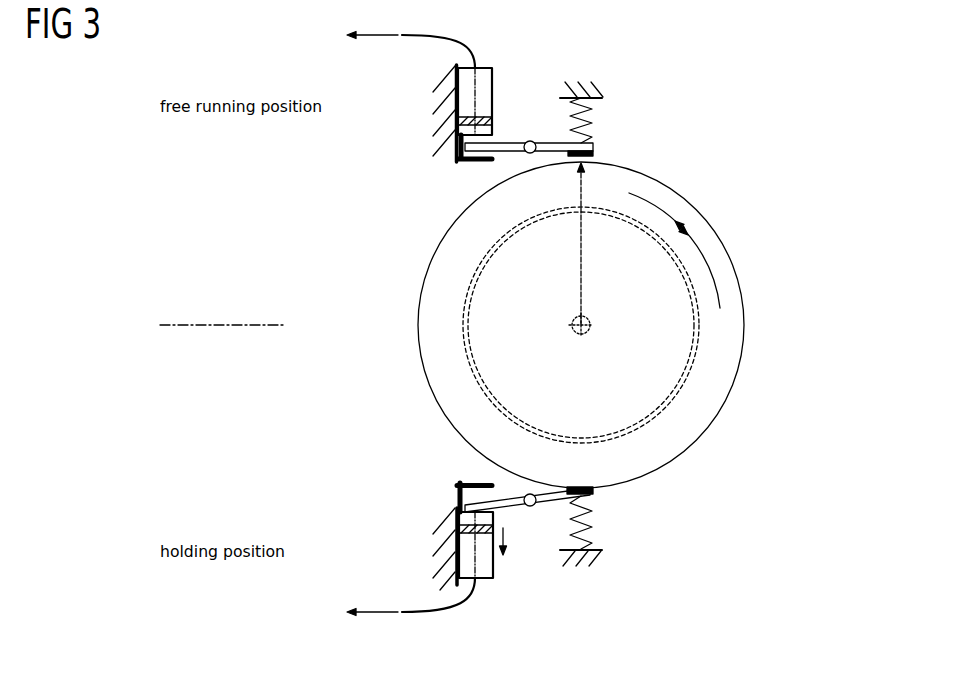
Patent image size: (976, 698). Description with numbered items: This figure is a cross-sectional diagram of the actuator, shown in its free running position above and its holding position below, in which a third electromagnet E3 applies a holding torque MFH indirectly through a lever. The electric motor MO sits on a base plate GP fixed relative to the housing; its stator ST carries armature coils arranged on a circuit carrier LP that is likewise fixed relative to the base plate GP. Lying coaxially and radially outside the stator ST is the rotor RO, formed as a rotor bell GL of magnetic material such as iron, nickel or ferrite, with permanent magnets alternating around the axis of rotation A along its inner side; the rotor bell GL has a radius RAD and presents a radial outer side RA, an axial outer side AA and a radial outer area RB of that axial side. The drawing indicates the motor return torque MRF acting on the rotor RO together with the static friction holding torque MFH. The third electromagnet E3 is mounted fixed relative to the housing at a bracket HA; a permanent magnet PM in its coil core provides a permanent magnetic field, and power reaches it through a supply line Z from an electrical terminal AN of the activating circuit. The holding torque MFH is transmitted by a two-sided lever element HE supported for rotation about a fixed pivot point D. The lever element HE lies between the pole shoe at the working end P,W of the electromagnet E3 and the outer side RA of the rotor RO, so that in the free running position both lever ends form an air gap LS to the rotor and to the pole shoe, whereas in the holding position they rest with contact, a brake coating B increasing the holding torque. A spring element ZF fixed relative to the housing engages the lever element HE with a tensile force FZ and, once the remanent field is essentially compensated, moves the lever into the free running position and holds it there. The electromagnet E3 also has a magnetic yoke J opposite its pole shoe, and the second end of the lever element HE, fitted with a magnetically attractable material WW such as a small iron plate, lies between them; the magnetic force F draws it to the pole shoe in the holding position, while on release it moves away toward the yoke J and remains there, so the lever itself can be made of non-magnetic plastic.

The rotor RO is at (742, 322).
The rotor bell GL is at (581, 325).
The stator ST is at (686, 368).
The axis of rotation A is at (592, 332).
The radius of the rotor bell RAD is at (604, 244).
The axial outer side AA is at (547, 273).
The circuit carrier LP is at (530, 370).
The base plate GP is at (882, 145).
The radial outer side of the rotor RA is at (442, 237).
The radial outer area of the axial outer side RB is at (432, 288).
The electric motor MO is at (389, 307).
The motor return torque MRF is at (657, 210).
The holding torque MFH is at (702, 257).
The third electromagnet E3 is at (493, 72).
The bracket HA is at (445, 78).
The permanent magnet PM is at (458, 117).
The magnetic yoke J is at (460, 148).
The lever element HE is at (513, 152).
The pivot point D is at (530, 141).
The pole shoe at working end P,W is at (475, 140).
The magnetic material WW is at (457, 502).
The air gap LS is at (595, 156).
The tension spring ZF is at (594, 110).
The brake coating B is at (587, 160).
The electrical terminal AN is at (392, 324).
The supply line Z is at (473, 598).
The magnetic force F is at (476, 556).
The tensile force FZ is at (597, 512).